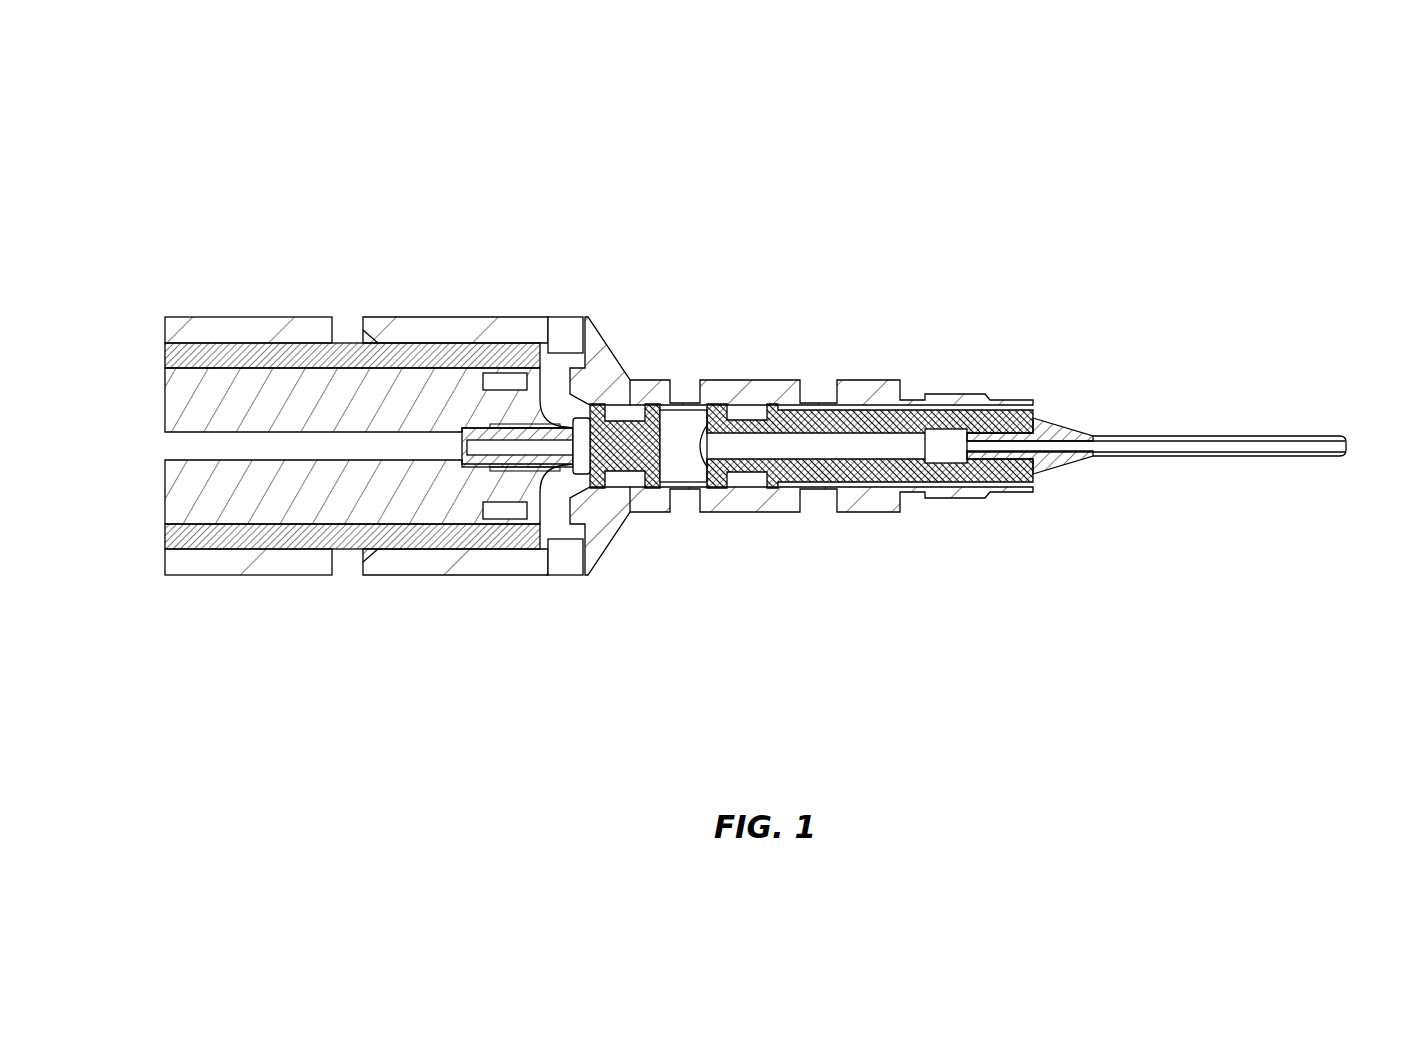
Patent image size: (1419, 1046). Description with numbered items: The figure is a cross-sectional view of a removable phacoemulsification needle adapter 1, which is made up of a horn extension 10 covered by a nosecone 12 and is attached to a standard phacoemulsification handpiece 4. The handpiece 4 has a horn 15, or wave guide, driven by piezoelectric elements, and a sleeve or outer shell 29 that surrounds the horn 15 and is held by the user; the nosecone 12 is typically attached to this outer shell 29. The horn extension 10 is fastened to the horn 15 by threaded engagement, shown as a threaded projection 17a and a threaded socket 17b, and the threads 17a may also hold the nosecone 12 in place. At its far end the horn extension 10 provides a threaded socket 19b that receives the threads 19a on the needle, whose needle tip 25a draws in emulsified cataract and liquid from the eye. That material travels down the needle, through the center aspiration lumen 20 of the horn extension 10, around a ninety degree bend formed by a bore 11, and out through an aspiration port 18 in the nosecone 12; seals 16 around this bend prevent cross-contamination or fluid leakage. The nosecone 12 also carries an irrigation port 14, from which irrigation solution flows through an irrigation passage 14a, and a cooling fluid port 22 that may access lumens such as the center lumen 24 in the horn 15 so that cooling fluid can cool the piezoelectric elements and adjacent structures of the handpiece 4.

The needle adapter 1 is at (959, 469).
The phacoemulsification handpiece 4 is at (368, 375).
The horn extension 10 is at (640, 458).
The bore 11 is at (688, 455).
The nosecone 12 is at (588, 527).
The irrigation port 14 is at (820, 392).
The irrigation passage 14a is at (945, 406).
The horn 15 is at (390, 500).
The seals 16 is at (497, 375).
The threaded projection 17a is at (542, 480).
The threaded socket 17b is at (525, 475).
The aspiration port 18 is at (686, 394).
The threads 19a is at (1008, 458).
The threaded socket 19b is at (1030, 470).
The center aspiration lumen 20 is at (852, 445).
The cooling fluid port 22 is at (566, 338).
The center lumen 24 is at (275, 447).
The needle tip 25a is at (1346, 450).
The outer shell 29 is at (305, 540).